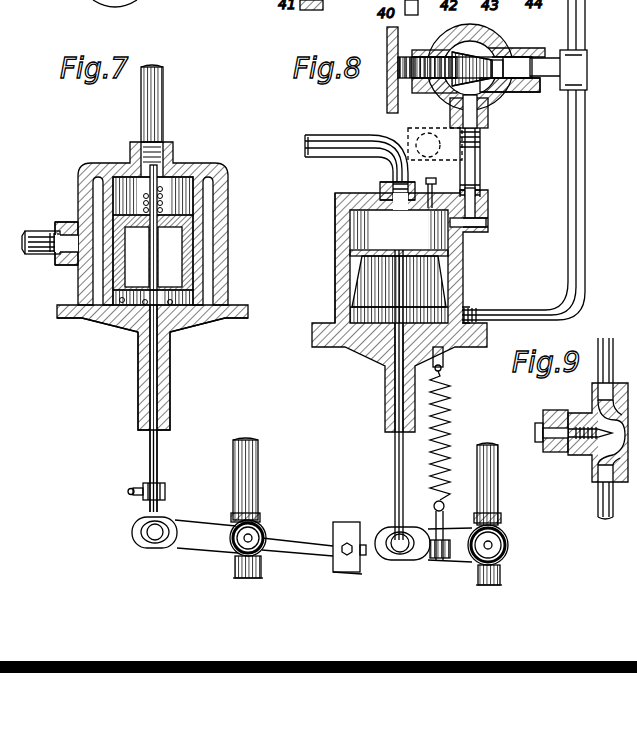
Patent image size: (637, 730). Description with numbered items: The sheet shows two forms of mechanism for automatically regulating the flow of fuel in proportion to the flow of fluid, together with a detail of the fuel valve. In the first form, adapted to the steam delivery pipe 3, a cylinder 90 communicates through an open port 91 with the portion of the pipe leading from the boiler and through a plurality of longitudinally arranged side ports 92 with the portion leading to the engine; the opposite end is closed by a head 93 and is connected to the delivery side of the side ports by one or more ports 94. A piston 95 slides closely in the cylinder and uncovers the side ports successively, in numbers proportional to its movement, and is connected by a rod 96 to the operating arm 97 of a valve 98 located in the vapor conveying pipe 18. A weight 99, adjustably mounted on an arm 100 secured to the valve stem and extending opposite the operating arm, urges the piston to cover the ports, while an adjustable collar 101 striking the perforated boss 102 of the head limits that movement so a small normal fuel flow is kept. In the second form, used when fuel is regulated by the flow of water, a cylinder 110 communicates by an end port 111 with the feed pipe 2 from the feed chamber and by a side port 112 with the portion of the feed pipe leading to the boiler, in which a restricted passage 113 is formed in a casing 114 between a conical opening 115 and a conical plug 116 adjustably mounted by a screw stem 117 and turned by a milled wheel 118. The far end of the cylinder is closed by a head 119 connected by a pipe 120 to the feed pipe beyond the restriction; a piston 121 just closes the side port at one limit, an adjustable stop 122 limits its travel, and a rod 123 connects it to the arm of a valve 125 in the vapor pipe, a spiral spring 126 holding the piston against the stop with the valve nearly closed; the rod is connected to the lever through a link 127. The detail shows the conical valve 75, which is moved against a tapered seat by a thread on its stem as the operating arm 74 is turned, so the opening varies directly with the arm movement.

In FIG. 8, the feed pipe 2 is at (587, 25).
In FIG. 7, the steam delivery pipe 3 is at (163, 97).
In FIG. 7, the vapor conveying pipe 18 is at (258, 461).
In FIG. 8, the vapor conveying pipe 18 is at (496, 468).
In FIG. 9, the operating arm 74 is at (553, 453).
In FIG. 9, the conical valve 75 is at (582, 455).
In FIG. 7, the cylinder 90 is at (197, 235).
In FIG. 7, the open port 91 is at (170, 160).
In FIG. 7, the side ports 92 is at (162, 189).
In FIG. 7, the head 93 is at (198, 318).
In FIG. 7, the ports 94 is at (95, 318).
In FIG. 7, the piston 95 is at (190, 254).
In FIG. 7, the rod 96 is at (150, 462).
In FIG. 7, the operating arm 97 is at (195, 521).
In FIG. 7, the valve 98 is at (262, 521).
In FIG. 7, the weight 99 is at (348, 529).
In FIG. 7, the arm 100 is at (297, 540).
In FIG. 7, the adjustable collar 101 is at (165, 492).
In FIG. 7, the perforated boss 102 is at (171, 386).
In FIG. 8, the cylinder 110 is at (464, 263).
In FIG. 8, the end port 111 is at (382, 193).
In FIG. 8, the side port 112 is at (490, 224).
In FIG. 8, the restricted passage 113 is at (492, 92).
In FIG. 8, the casing 114 is at (448, 50).
In FIG. 8, the conical opening 115 is at (500, 71).
In FIG. 8, the conical plug 116 is at (482, 62).
In FIG. 8, the screw stem 117 is at (428, 80).
In FIG. 8, the milled wheel 118 is at (390, 86).
In FIG. 8, the head 119 is at (453, 346).
In FIG. 8, the pipe 120 is at (512, 310).
In FIG. 8, the piston 121 is at (333, 272).
In FIG. 8, the adjustable stop 122 is at (436, 186).
In FIG. 8, the rod 123 is at (395, 455).
In FIG. 8, the valve 125 is at (502, 532).
In FIG. 8, the spring 126 is at (450, 436).
In FIG. 8, the link 127 is at (452, 561).